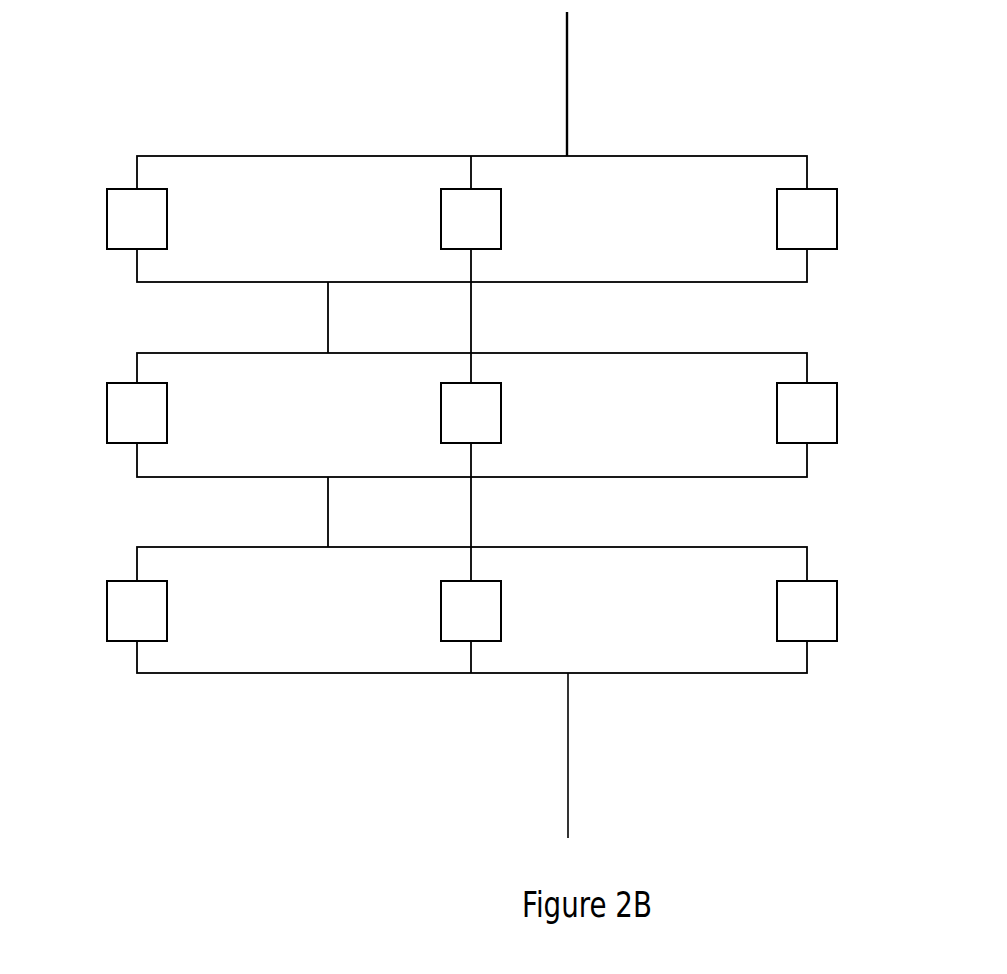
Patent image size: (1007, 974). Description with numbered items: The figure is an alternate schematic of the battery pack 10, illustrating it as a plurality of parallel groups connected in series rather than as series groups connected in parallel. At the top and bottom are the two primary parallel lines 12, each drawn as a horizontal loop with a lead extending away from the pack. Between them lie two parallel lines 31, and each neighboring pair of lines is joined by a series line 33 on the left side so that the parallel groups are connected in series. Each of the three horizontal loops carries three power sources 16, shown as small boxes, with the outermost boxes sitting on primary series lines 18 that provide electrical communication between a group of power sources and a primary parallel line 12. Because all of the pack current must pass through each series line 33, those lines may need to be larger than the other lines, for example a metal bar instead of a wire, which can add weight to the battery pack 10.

The battery pack 10 is at (690, 78).
The primary parallel line 12 is at (278, 157).
The power source 16 is at (107, 218).
The primary series line 18 is at (807, 171).
The parallel line 31 is at (640, 353).
The series line 33 is at (323, 316).